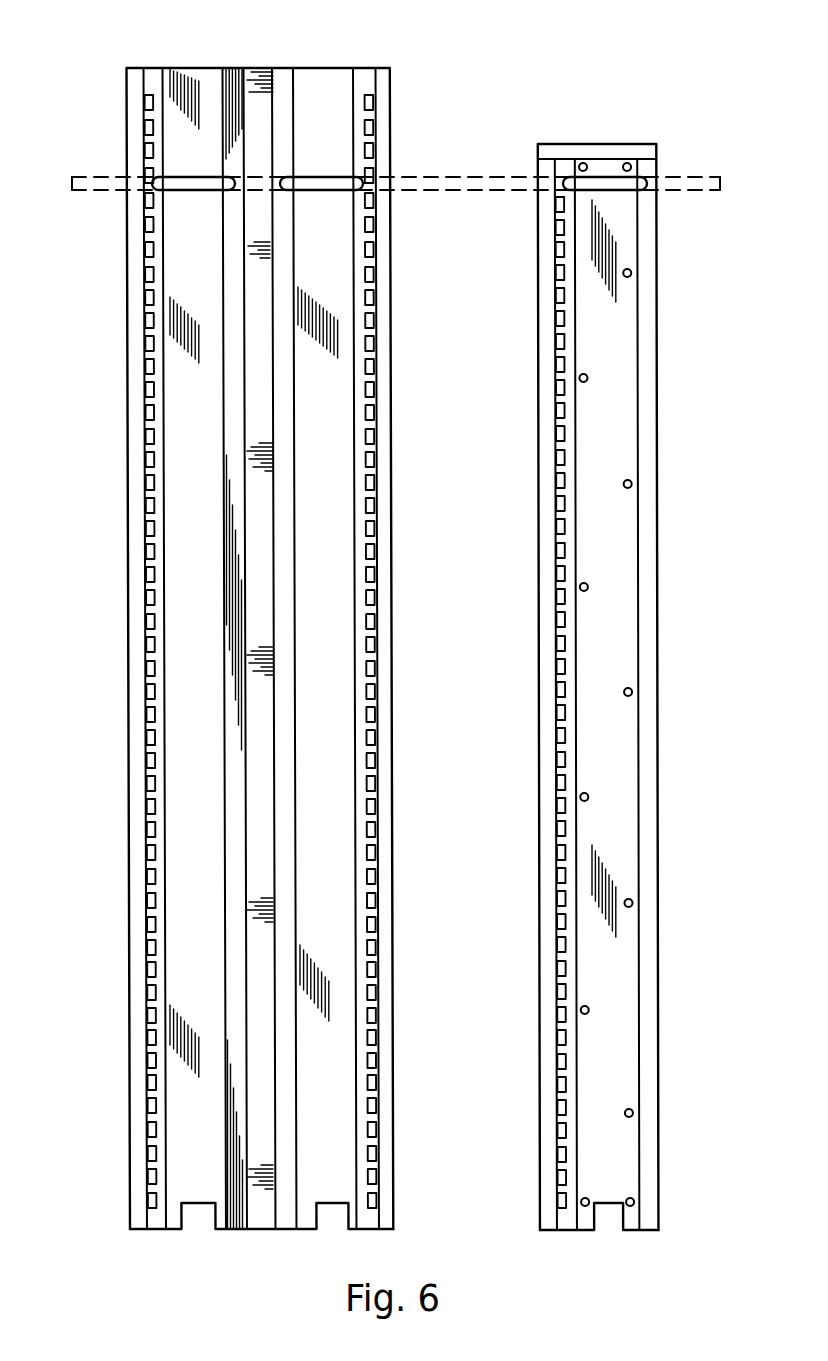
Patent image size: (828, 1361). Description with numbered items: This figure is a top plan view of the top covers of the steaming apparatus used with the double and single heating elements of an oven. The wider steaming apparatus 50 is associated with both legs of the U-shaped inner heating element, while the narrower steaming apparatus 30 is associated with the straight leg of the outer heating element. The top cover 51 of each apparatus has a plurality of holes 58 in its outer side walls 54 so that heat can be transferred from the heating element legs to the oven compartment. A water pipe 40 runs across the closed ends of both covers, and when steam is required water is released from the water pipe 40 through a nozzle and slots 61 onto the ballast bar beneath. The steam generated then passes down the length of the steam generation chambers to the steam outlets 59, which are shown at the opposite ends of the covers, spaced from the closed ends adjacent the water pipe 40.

The steaming apparatus 30 is at (608, 128).
The water pipe 40 is at (458, 177).
The steaming apparatus 50 is at (417, 122).
The top cover 51 is at (187, 87).
The outer side walls 54 is at (158, 353).
The holes 58 is at (147, 293).
The steam outlets 59 is at (197, 1222).
The slots 61 is at (182, 180).